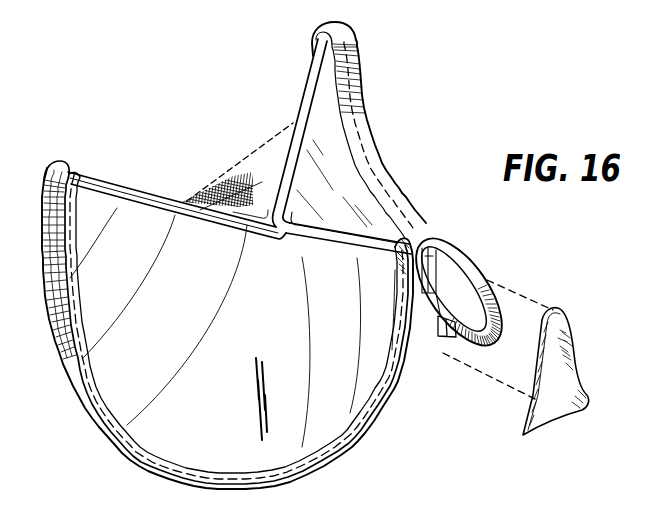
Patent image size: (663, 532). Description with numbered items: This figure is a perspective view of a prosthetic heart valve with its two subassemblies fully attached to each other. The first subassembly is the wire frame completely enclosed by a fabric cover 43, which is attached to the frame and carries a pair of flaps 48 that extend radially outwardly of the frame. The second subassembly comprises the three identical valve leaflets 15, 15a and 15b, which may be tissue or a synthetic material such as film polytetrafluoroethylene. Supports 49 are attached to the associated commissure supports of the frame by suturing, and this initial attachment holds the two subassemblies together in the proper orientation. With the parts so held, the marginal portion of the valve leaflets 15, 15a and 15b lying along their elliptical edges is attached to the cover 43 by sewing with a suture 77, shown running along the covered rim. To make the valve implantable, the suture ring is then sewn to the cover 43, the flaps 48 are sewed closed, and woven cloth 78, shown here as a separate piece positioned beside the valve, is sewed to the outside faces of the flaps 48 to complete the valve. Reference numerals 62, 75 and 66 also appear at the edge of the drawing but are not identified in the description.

The valve leaflet 15 is at (312, 427).
The valve leaflet 15a is at (333, 187).
The valve leaflet 15b is at (253, 198).
The fabric cover 43 is at (167, 478).
The suture 77 is at (221, 480).
The support 49 is at (443, 343).
The woven cloth 78 is at (557, 363).
The element 62 is at (495, 523).
The element 75 is at (549, 519).
The element 66 is at (602, 519).
The flap 48 is at (640, 525).